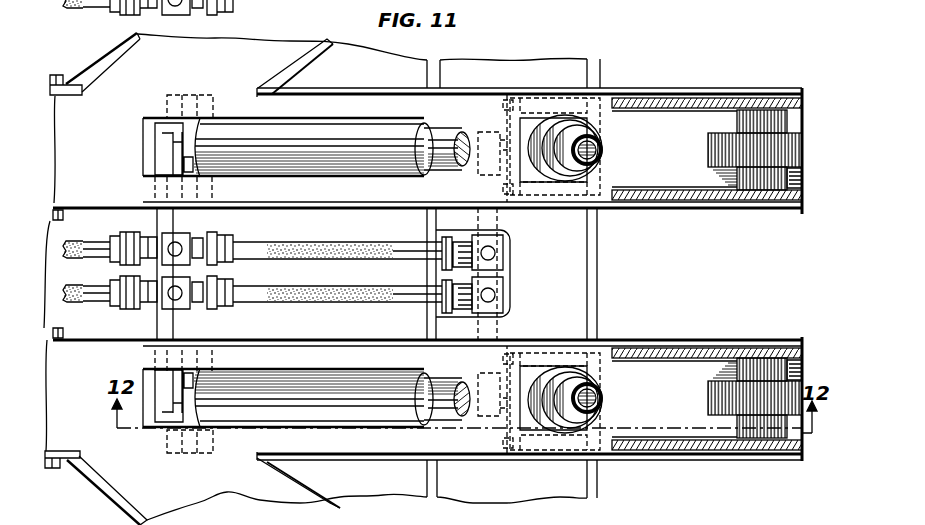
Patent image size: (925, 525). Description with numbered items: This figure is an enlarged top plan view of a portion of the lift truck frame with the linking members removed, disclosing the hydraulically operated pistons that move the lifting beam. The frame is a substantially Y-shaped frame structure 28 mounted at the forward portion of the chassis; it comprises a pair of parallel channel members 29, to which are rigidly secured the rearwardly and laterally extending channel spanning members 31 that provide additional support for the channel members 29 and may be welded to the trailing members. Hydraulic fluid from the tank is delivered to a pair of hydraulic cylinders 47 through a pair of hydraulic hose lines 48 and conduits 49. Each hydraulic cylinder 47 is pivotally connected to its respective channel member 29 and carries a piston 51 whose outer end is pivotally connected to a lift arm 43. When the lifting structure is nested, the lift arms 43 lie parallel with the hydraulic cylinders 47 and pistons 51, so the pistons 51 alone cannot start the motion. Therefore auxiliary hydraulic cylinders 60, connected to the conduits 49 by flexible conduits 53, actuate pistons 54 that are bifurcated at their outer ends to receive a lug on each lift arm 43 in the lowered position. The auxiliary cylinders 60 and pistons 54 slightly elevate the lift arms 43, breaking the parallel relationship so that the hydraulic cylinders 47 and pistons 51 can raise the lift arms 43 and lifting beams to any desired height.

The Y-shaped frame structure 28 is at (699, 90).
The channel member 29 is at (678, 211).
The channel spanning member 31 is at (93, 67).
The lift arm 43 is at (682, 109).
The hydraulic cylinder 47 is at (323, 143).
The hydraulic hose line 48 is at (78, 282).
The conduit 49 is at (185, 94).
The piston 51 is at (448, 138).
The flexible conduit 53 is at (313, 250).
The piston 54 is at (596, 163).
The auxiliary hydraulic cylinder 60 is at (570, 120).